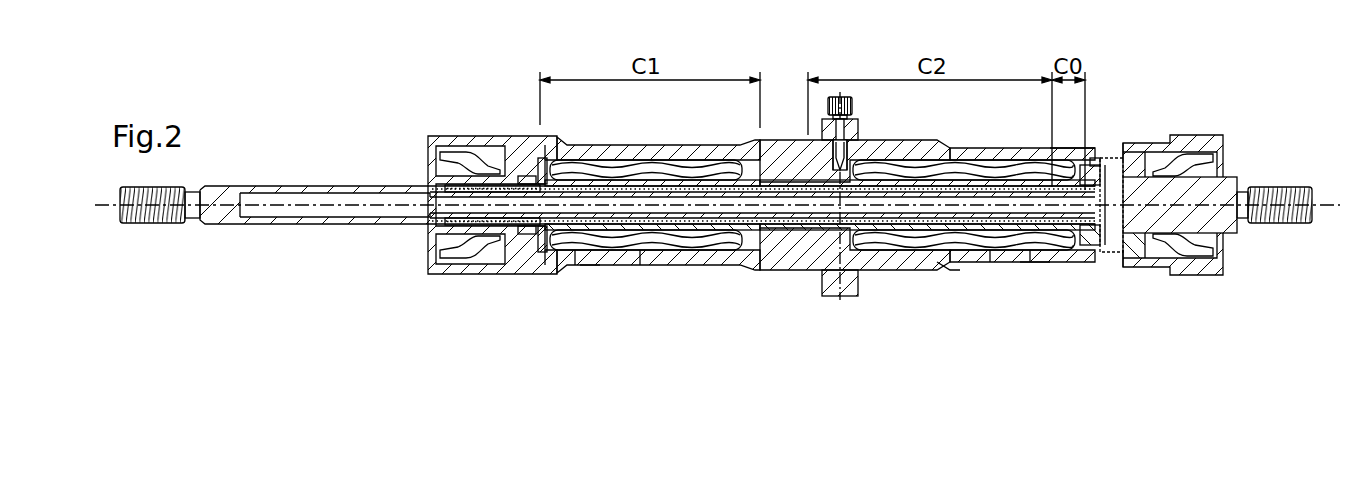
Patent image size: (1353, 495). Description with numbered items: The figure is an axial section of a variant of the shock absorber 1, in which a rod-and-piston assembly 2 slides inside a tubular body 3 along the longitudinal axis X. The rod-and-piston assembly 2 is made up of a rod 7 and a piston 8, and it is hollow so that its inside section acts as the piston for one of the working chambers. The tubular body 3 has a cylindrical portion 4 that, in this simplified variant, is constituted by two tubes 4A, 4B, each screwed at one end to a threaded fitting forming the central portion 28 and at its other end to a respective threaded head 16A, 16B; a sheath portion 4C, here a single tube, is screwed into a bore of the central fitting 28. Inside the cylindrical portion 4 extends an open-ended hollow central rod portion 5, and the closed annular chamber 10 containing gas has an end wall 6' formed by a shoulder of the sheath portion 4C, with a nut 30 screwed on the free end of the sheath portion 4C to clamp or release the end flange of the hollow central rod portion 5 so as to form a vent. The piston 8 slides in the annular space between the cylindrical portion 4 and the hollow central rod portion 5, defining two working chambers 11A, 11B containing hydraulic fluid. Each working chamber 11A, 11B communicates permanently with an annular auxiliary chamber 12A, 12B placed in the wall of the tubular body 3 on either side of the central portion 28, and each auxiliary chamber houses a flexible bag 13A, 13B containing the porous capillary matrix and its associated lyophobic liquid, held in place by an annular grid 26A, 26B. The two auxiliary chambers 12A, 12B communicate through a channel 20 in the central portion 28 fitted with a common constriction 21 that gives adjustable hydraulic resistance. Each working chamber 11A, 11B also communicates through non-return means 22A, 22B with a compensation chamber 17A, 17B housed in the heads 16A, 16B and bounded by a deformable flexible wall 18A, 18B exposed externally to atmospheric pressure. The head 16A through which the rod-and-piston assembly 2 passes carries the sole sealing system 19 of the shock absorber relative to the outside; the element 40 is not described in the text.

The shock absorber 1 is at (477, 74).
The rod-and-piston assembly 2 is at (249, 231).
The tubular body 3 is at (786, 112).
The cylindrical portion 4 is at (659, 136).
The tube 4A is at (610, 267).
The tube 4B is at (1010, 265).
The sheath portion 4C is at (1032, 263).
The hollow central rod portion 5 is at (590, 266).
The end wall 6' is at (1108, 241).
The rod 7 is at (368, 225).
The piston 8 is at (780, 272).
The closed annular chamber 10 is at (1085, 265).
The working chamber 11A is at (547, 268).
The working chamber 11B is at (1126, 274).
The auxiliary chamber 12A is at (700, 267).
The auxiliary chamber 12B is at (990, 266).
The flexible bag 13A is at (655, 262).
The flexible bag 13B is at (955, 270).
The head 16A is at (457, 135).
The head 16B is at (1198, 134).
The compensation chamber 17A is at (470, 275).
The compensation chamber 17B is at (1190, 274).
The deformable flexible wall 18A is at (472, 147).
The deformable flexible wall 18B is at (1166, 132).
The sealing system 19 is at (430, 191).
The channel 20 is at (876, 140).
The common constriction 21 is at (851, 112).
The non-return means 22A is at (544, 142).
The non-return means 22B is at (1122, 141).
The annular grid 26A is at (525, 268).
The annular grid 26B is at (1096, 163).
The central portion 28 is at (842, 300).
The nut 30 is at (1060, 140).
The body step 40 is at (905, 268).
The longitudinal axis X is at (115, 212).